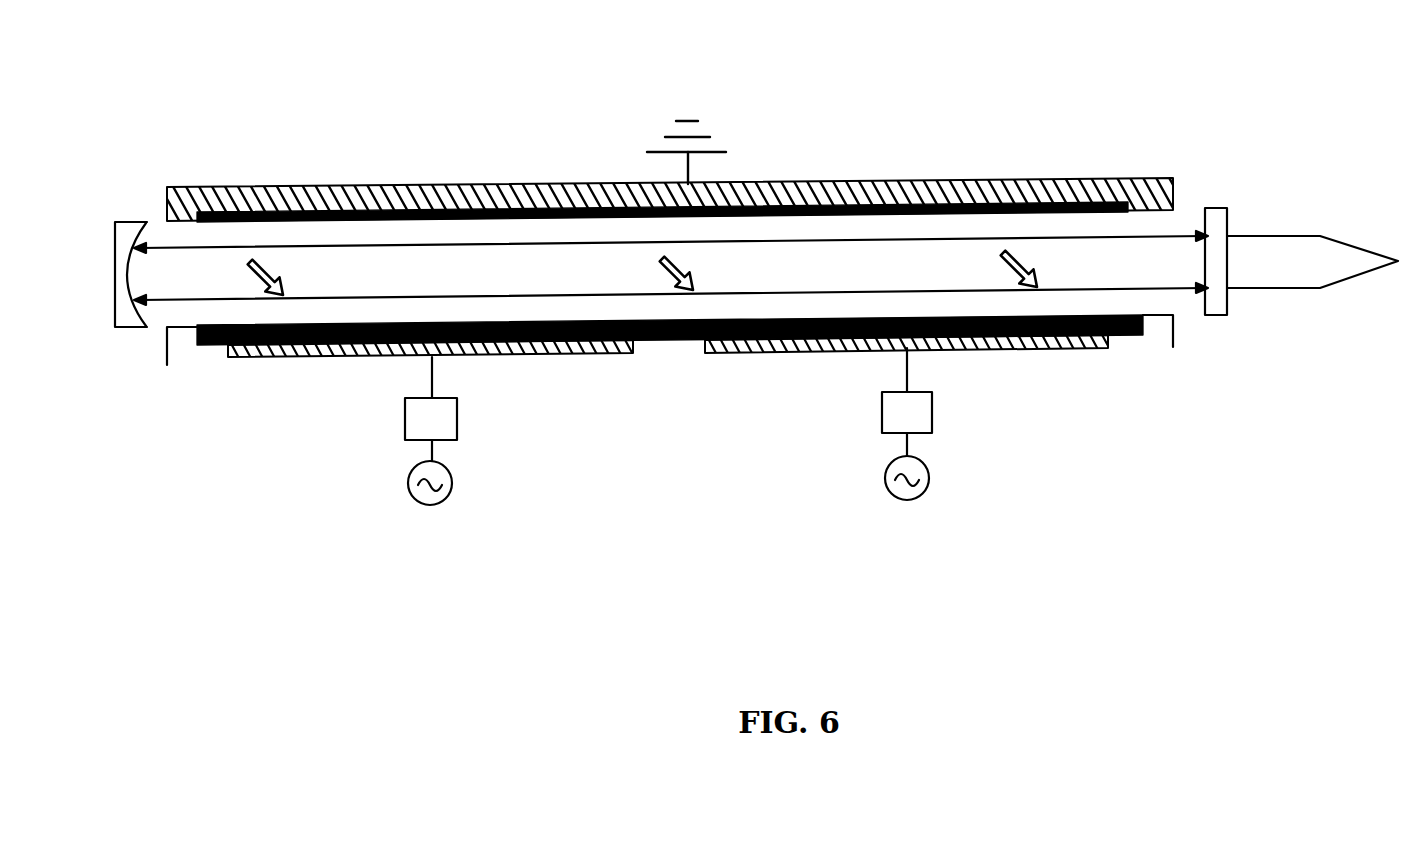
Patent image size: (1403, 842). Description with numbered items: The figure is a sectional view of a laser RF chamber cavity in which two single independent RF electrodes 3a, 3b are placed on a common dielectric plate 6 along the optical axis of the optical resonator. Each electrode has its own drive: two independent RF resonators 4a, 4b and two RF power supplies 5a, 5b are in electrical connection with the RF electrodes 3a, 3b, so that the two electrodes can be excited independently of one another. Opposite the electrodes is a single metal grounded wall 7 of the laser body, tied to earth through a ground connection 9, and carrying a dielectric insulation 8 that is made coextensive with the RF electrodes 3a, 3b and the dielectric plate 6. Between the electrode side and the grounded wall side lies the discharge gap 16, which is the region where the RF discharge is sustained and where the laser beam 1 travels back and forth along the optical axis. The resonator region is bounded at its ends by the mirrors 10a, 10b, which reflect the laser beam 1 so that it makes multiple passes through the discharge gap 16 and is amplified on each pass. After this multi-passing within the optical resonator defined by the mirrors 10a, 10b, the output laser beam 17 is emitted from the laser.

The laser beam 1 is at (278, 281).
The RF electrode 3a is at (520, 347).
The RF electrode 3b is at (997, 342).
The RF resonator 4a is at (447, 418).
The RF resonator 4b is at (923, 413).
The RF power supply 5a is at (433, 497).
The RF power supply 5b is at (910, 488).
The dielectric plate 6 is at (658, 342).
The metal grounded wall 7 is at (553, 188).
The dielectric insulation 8 is at (415, 217).
The ground connection 9 is at (688, 120).
The mirror 10a is at (133, 326).
The mirror 10b is at (1214, 312).
The discharge gap 16 is at (887, 262).
The output laser beam 17 is at (1328, 260).